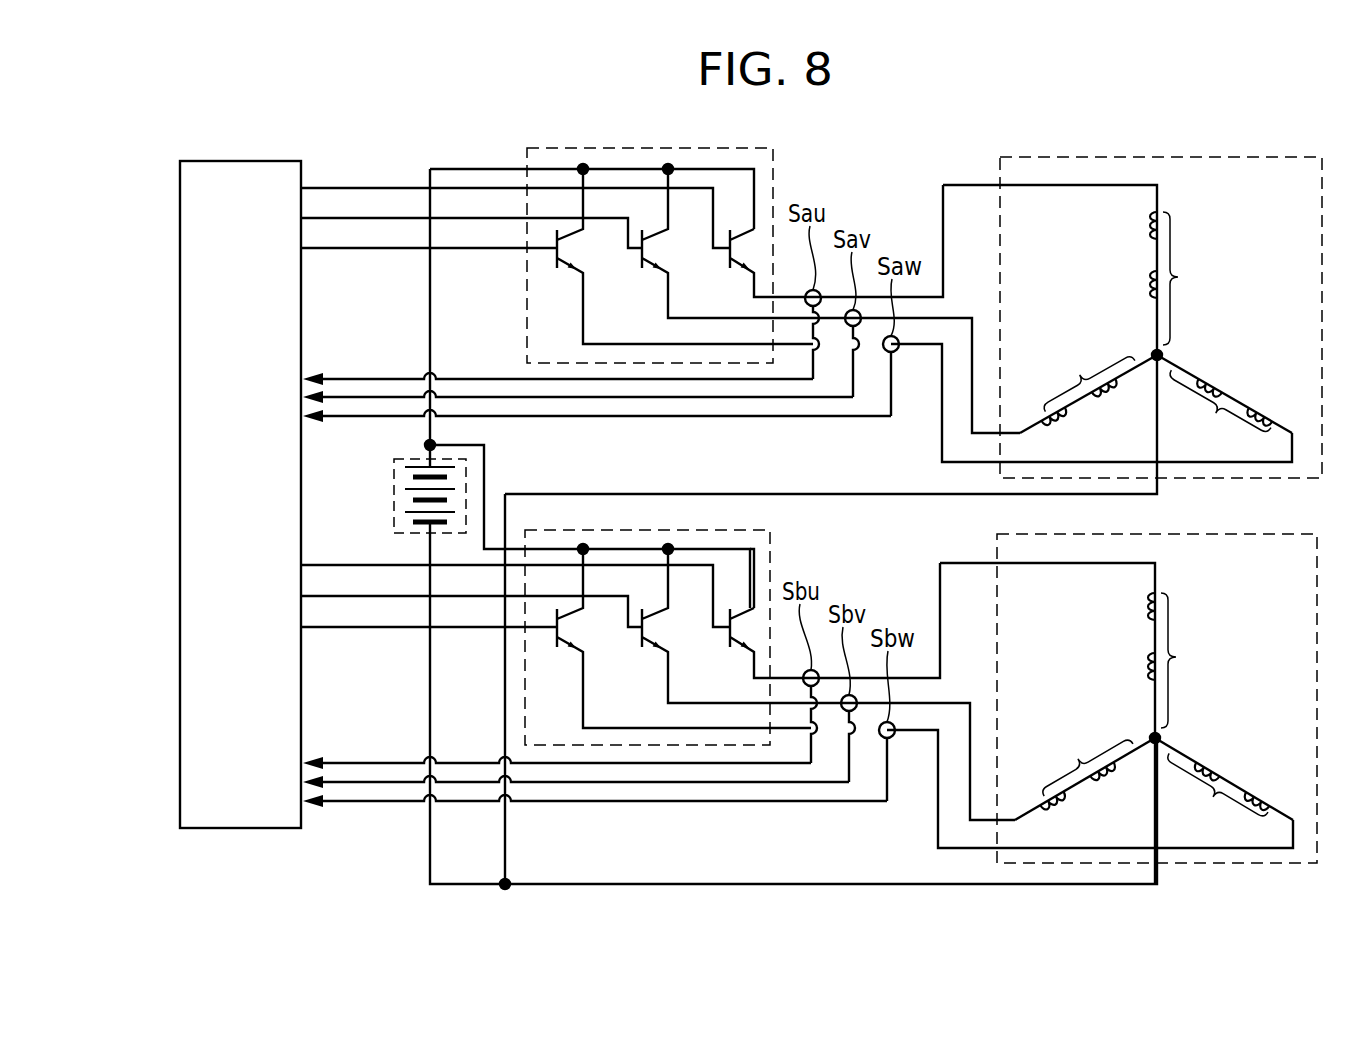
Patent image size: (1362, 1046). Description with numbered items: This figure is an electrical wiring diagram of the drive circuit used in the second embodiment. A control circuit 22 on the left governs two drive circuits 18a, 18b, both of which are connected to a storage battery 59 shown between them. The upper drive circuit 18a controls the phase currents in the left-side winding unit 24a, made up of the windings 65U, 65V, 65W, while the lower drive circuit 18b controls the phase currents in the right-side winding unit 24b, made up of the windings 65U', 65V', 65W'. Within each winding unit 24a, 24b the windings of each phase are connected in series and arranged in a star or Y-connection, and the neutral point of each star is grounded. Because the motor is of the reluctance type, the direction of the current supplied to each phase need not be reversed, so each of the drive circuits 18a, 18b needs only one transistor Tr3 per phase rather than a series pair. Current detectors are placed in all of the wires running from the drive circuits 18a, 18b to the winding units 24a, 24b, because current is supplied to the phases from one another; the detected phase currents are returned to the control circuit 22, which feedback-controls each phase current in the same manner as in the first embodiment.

The control circuit 22 is at (192, 440).
The storage battery 59 is at (394, 498).
The drive circuit 18a is at (690, 233).
The drive circuit 18b is at (632, 531).
The winding unit 24a is at (1132, 295).
The winding unit 24b is at (1128, 692).
The left side winding 65U is at (1112, 255).
The left side winding 65V is at (1090, 417).
The left side winding 65W is at (1239, 379).
The right side winding 65U' is at (1108, 636).
The right side winding 65V' is at (1095, 799).
The right side winding 65W' is at (1242, 761).
The transistor Tr3 is at (685, 256).